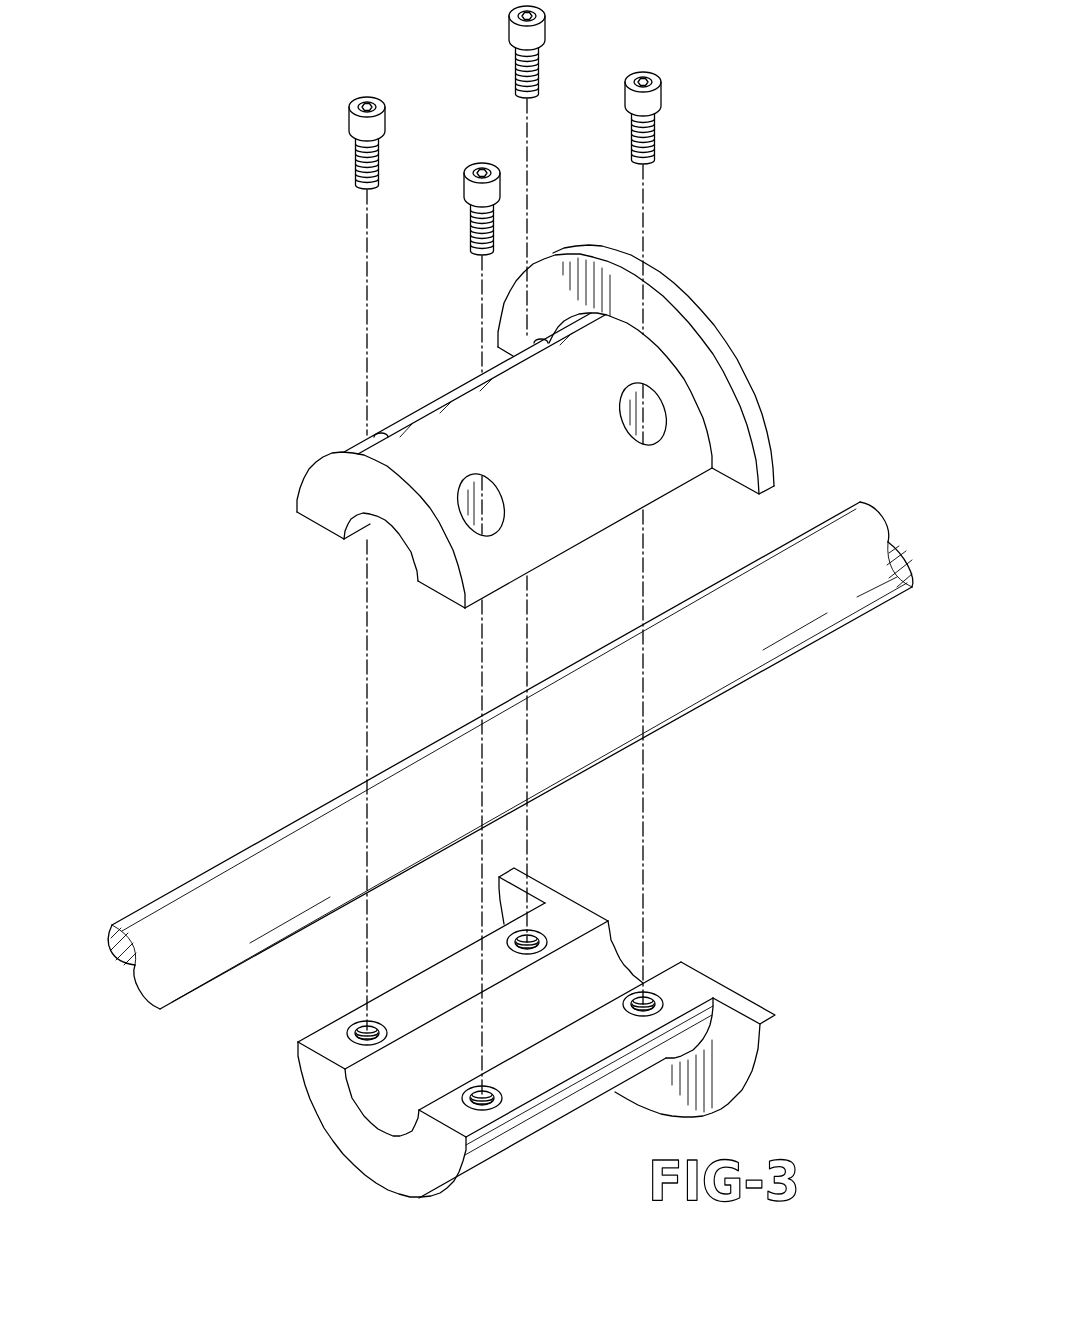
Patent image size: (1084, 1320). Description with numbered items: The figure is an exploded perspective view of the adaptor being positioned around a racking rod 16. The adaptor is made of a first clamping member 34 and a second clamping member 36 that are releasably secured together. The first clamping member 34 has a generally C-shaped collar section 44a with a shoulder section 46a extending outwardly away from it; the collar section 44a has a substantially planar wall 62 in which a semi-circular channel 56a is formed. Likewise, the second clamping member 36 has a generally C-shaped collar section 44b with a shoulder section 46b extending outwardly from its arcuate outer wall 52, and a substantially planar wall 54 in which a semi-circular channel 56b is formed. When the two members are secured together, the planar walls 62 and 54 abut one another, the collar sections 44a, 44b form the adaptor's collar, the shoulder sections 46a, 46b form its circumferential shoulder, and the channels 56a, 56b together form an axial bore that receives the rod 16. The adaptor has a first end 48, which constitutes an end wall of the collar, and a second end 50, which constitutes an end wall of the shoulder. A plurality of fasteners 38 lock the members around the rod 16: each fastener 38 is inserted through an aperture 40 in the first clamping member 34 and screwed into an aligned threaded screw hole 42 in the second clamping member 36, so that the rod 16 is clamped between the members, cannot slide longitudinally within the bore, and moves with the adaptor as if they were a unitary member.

The racking rod 16 is at (192, 896).
The first clamping member 34 is at (538, 717).
The second clamping member 36 is at (534, 1039).
The fasteners 38 is at (508, 31).
The apertures 40 is at (540, 338).
The threaded screw holes 42 is at (515, 935).
The collar section 44a is at (657, 492).
The collar section 44b is at (566, 1126).
The shoulder section 46a is at (678, 571).
The shoulder section 46b is at (740, 1100).
The first end 48 is at (311, 477).
The second end 50 is at (690, 297).
The arcuate outer wall 52 is at (509, 1141).
The planar wall 54 is at (452, 975).
The semi-circular channel 56a is at (355, 535).
The semi-circular channel 56b is at (385, 1107).
The planar wall 62 is at (549, 567).